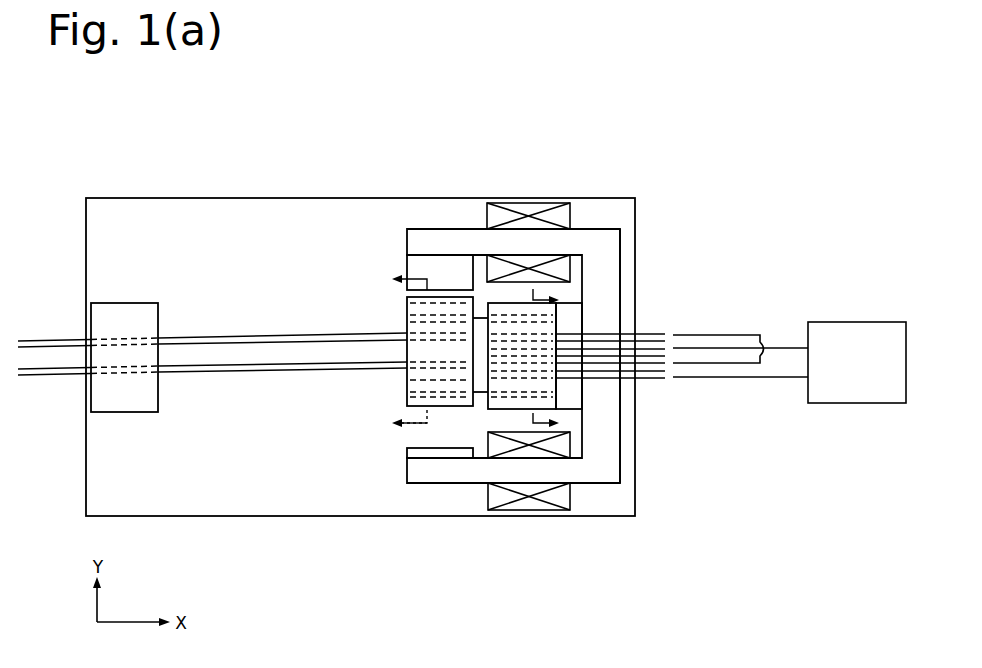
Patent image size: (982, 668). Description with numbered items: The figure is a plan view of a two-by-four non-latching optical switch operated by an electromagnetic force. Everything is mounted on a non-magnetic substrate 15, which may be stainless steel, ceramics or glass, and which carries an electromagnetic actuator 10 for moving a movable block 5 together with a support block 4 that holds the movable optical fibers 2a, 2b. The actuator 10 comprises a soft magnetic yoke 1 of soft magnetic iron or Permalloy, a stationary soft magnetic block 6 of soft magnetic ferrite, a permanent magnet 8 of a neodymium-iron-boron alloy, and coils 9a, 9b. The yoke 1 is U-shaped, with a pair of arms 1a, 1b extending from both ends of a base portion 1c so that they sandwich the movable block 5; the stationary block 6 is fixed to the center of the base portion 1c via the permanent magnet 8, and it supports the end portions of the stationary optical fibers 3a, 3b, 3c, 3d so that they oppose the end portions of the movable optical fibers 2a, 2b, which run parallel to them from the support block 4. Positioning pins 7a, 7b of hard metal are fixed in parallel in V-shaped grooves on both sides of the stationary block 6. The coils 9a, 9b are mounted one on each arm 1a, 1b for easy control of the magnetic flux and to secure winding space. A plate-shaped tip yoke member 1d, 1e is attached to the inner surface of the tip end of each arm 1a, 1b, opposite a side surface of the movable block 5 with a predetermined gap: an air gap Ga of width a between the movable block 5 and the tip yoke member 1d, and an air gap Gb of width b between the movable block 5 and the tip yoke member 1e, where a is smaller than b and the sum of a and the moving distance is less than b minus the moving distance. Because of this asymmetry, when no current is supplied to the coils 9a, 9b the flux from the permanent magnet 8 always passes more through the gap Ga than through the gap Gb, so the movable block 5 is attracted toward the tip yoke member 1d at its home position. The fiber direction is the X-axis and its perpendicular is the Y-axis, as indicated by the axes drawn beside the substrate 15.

The electromagnetic actuator 10 is at (616, 172).
The non-magnetic substrate 15 is at (126, 218).
The support block 4 is at (103, 322).
The movable optical fiber 2a is at (208, 343).
The movable optical fiber 2b is at (202, 372).
The soft magnetic yoke 1 is at (622, 223).
The arm 1a is at (456, 240).
The arm 1b is at (473, 473).
The base portion 1c is at (605, 307).
The tip yoke member 1d is at (416, 268).
The tip yoke member 1e is at (437, 453).
The air gap Ga is at (445, 290).
The air gap Gb is at (418, 433).
The movable block 5 is at (422, 350).
The stationary soft magnetic block 6 is at (517, 407).
The positioning pin 7a is at (478, 318).
The positioning pin 7b is at (482, 397).
The permanent magnet 8 is at (572, 398).
The coil 9a is at (537, 210).
The coil 9b is at (542, 507).
The stationary optical fiber 3a is at (665, 335).
The stationary optical fiber 3b is at (665, 350).
The stationary optical fiber 3c is at (665, 365).
The stationary optical fiber 3d is at (665, 378).